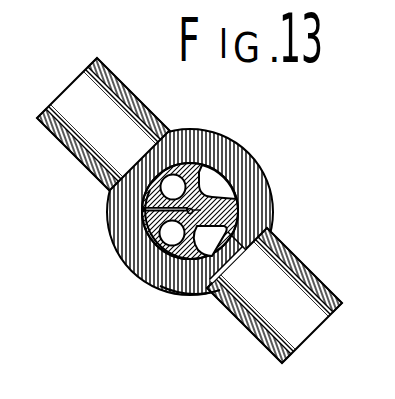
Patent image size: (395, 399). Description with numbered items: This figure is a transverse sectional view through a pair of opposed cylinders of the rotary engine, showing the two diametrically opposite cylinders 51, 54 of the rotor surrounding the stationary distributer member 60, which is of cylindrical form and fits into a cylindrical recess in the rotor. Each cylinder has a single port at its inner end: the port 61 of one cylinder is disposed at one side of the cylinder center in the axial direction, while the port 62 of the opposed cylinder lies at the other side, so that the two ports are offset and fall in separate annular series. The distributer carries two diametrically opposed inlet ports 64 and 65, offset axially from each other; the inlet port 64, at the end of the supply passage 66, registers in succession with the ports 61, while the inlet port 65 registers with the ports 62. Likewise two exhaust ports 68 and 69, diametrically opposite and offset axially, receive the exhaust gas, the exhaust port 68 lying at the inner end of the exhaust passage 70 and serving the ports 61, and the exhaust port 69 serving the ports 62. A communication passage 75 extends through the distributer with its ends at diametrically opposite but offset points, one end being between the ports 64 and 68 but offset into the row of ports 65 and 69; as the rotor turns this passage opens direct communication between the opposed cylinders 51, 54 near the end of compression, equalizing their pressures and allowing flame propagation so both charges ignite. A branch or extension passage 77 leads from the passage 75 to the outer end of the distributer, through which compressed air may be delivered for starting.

The cylinder 51 is at (266, 344).
The cylinder 54 is at (67, 142).
The stationary distributer member 60 is at (177, 264).
The cylinder port 61 is at (150, 190).
The cylinder port 62 is at (228, 254).
The inlet port 64 is at (150, 192).
The inlet port 65 is at (217, 238).
The supply passage 66 is at (177, 182).
The exhaust port 68 is at (168, 242).
The exhaust port 69 is at (220, 180).
The exhaust passage 70 is at (158, 262).
The communication passage 75 is at (148, 227).
The branch or extension passage 77 is at (238, 208).